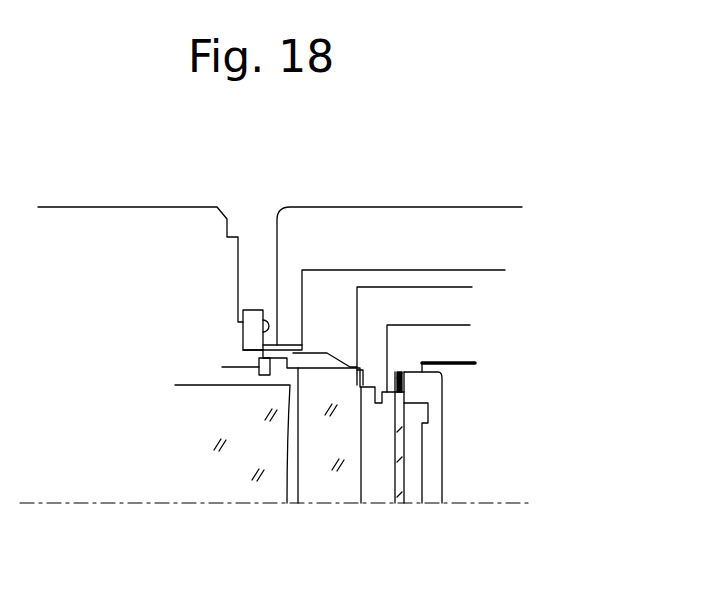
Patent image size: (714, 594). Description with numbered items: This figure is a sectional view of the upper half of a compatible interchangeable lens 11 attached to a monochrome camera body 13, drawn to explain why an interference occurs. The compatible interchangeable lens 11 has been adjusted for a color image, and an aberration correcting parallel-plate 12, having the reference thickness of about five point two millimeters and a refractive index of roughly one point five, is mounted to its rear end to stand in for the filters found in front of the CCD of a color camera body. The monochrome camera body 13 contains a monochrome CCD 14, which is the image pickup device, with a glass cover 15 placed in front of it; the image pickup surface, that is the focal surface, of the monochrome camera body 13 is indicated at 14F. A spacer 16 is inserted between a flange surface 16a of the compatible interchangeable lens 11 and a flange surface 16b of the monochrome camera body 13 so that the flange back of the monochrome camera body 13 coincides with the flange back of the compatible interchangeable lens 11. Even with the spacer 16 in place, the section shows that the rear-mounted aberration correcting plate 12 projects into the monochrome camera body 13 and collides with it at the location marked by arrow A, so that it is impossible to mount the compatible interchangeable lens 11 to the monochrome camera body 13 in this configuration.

The compatible interchangeable lens 11 is at (162, 228).
The monochrome camera body 13 is at (422, 213).
The spacer 16 is at (256, 310).
The flange surface of the compatible interchangeable lens 16a is at (243, 331).
The flange surface of the monochrome camera body 16b is at (266, 325).
The aberration correcting parallel-plate 12 is at (320, 498).
The glass cover 15 is at (398, 504).
The monochrome CCD 14 is at (437, 465).
The image pickup surface 14F is at (423, 504).
The arrow A is at (352, 395).